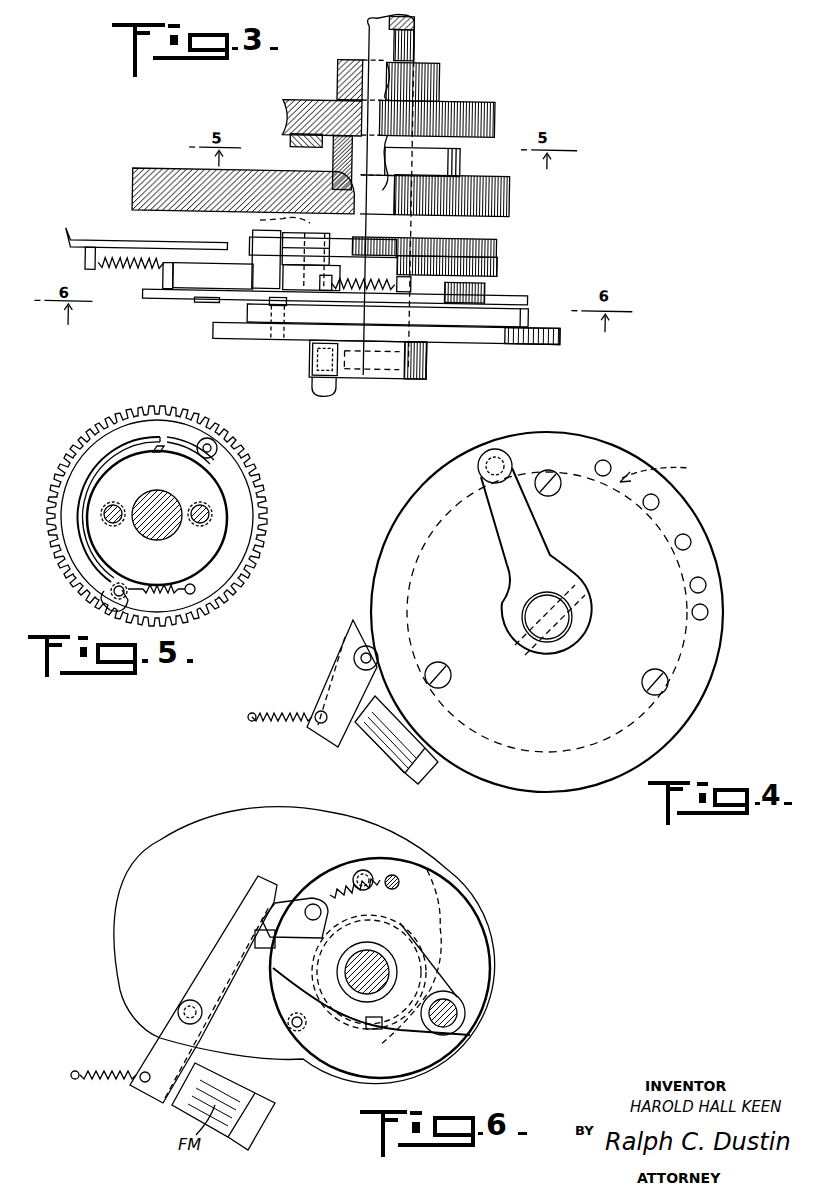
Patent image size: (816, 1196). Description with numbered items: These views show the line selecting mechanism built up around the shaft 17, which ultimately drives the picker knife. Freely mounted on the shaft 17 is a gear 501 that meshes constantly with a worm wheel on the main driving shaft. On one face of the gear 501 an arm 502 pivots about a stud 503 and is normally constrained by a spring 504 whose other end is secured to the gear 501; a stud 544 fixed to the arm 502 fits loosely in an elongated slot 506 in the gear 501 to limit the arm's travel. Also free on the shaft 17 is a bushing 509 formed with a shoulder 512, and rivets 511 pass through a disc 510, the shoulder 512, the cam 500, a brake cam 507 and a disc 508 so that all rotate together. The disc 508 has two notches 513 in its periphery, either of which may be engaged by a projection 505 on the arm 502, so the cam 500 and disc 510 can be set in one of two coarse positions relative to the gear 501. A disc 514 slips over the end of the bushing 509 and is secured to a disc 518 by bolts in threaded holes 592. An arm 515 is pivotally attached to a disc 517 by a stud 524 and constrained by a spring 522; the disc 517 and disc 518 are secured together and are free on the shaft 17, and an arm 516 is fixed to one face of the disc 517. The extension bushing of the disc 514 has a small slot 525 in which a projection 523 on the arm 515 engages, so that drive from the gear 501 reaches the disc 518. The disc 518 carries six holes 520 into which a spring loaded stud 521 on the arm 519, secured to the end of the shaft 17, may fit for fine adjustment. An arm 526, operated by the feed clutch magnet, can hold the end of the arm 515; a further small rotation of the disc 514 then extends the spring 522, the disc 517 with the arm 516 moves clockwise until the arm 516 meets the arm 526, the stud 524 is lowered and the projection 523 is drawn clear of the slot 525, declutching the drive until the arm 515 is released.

In FIG. 3, the shaft 17 is at (415, 37).
In FIG. 5, the shaft 17 is at (162, 535).
In FIG. 4, the shaft 17 is at (560, 625).
In FIG. 6, the shaft 17 is at (367, 972).
In FIG. 3, the cam 500 is at (135, 176).
In FIG. 3, the gear 501 is at (484, 103).
In FIG. 5, the gear 501 is at (247, 490).
In FIG. 5, the arm 502 is at (92, 450).
In FIG. 5, the stud 503 is at (214, 440).
In FIG. 5, the spring 504 is at (166, 600).
In FIG. 5, the projection 505 is at (160, 452).
In FIG. 5, the elongated slot 506 is at (96, 588).
In FIG. 3, the brake cam 507 is at (461, 158).
In FIG. 6, the brake cam 507 is at (412, 893).
In FIG. 3, the disc 508 is at (291, 146).
In FIG. 5, the disc 508 is at (213, 514).
In FIG. 3, the bushing 509 is at (458, 284).
In FIG. 6, the bushing 509 is at (415, 965).
In FIG. 3, the disc 510 is at (499, 244).
In FIG. 3, the rivets 511 is at (334, 163).
In FIG. 5, the rivets 511 is at (205, 524).
In FIG. 3, the shoulder 512 is at (442, 215).
In FIG. 5, the notches 513 is at (160, 440).
In FIG. 3, the disc 514 is at (500, 264).
In FIG. 3, the arm 515 is at (488, 292).
In FIG. 6, the arm 515 is at (288, 902).
In FIG. 3, the arm 516 is at (505, 309).
In FIG. 6, the arm 516 is at (282, 982).
In FIG. 3, the disc 517 is at (520, 326).
In FIG. 4, the disc 517 is at (670, 470).
In FIG. 3, the disc 518 is at (564, 340).
In FIG. 4, the disc 518 is at (690, 708).
In FIG. 3, the arm 519 is at (365, 383).
In FIG. 4, the arm 519 is at (510, 546).
In FIG. 4, the holes 520 is at (706, 582).
In FIG. 3, the spring loaded stud 521 is at (317, 338).
In FIG. 6, the spring 522 is at (338, 890).
In FIG. 6, the projection 523 is at (360, 1022).
In FIG. 6, the stud 524 is at (452, 1034).
In FIG. 6, the slot 525 is at (376, 1030).
In FIG. 6, the arm 526 is at (232, 932).
In FIG. 5, the stud 544 is at (114, 598).
In FIG. 3, the threaded holes 592 is at (283, 253).